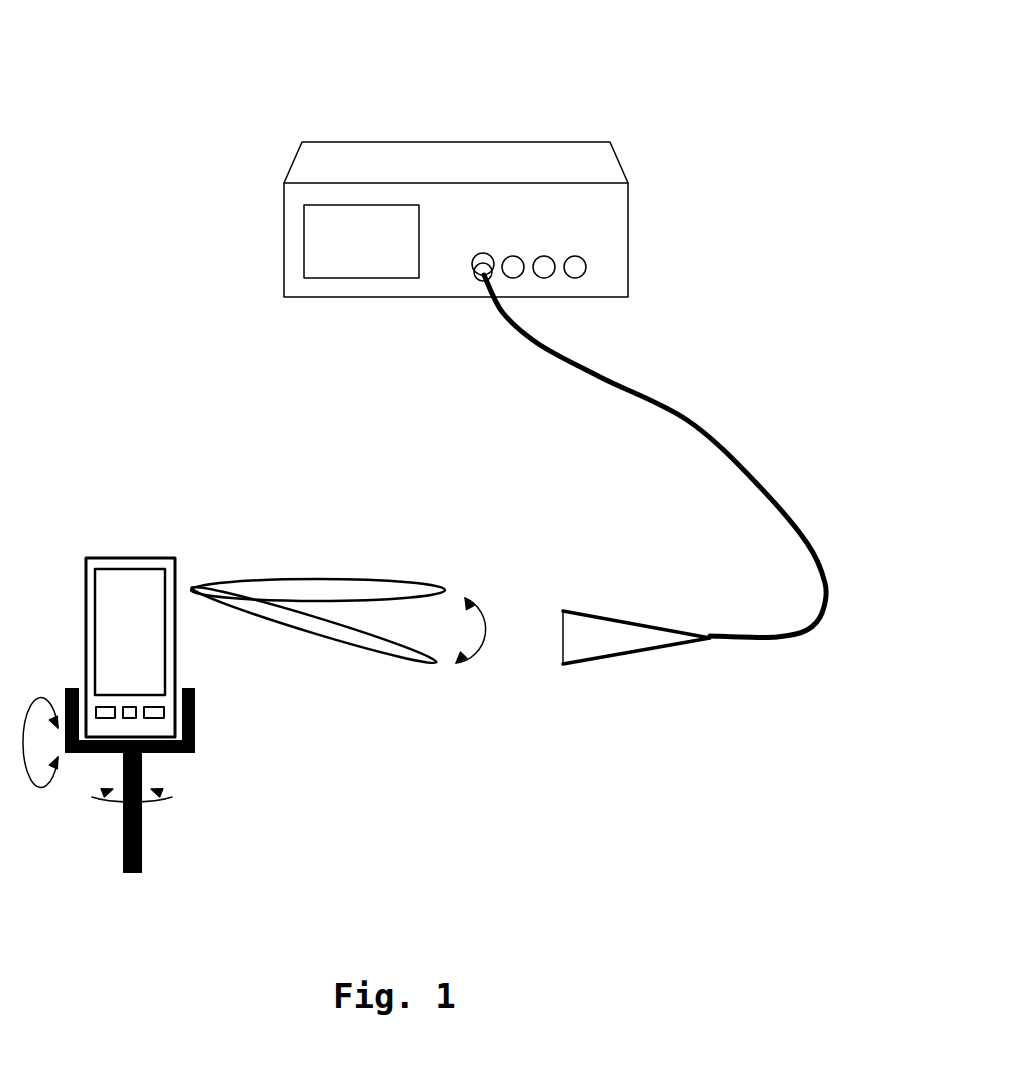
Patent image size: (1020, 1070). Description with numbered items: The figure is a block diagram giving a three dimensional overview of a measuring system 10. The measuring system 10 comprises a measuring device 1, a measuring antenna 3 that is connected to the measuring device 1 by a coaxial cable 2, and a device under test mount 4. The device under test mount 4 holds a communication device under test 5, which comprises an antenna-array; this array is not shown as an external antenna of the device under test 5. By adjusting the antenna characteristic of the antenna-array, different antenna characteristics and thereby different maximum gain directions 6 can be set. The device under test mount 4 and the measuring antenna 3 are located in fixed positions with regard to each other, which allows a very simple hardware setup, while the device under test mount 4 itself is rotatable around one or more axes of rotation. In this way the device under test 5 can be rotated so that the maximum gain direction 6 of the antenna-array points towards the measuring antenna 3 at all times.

The measuring system 10 is at (687, 84).
The measuring device 1 is at (531, 142).
The coaxial cable 2 is at (685, 418).
The measuring antenna 3 is at (687, 630).
The device under test mount 4 is at (63, 702).
The communication device under test 5 is at (128, 557).
The maximum gain direction 6 is at (319, 536).